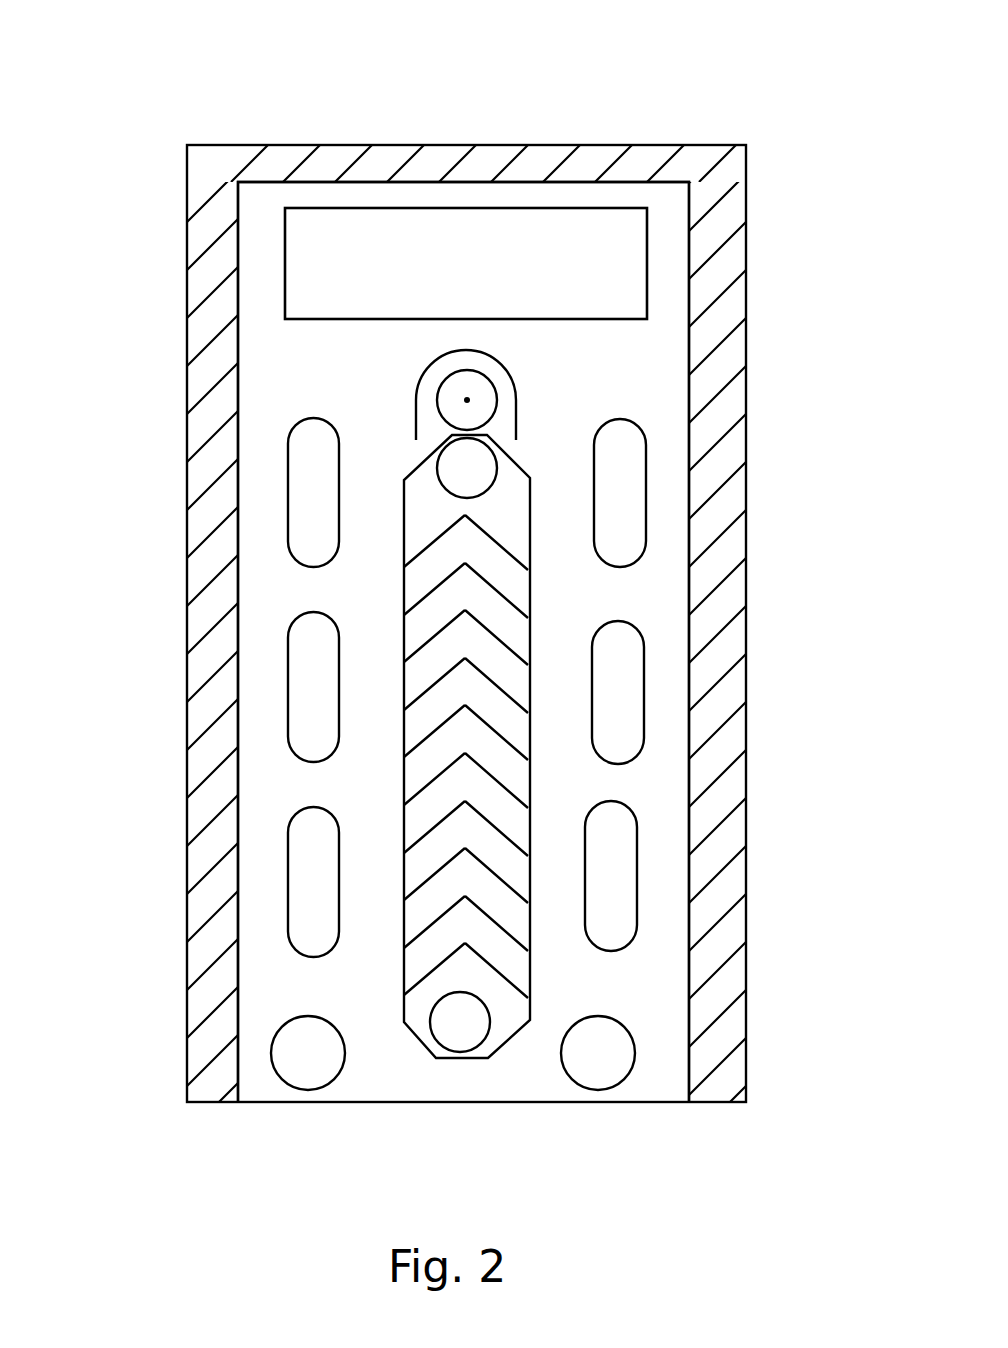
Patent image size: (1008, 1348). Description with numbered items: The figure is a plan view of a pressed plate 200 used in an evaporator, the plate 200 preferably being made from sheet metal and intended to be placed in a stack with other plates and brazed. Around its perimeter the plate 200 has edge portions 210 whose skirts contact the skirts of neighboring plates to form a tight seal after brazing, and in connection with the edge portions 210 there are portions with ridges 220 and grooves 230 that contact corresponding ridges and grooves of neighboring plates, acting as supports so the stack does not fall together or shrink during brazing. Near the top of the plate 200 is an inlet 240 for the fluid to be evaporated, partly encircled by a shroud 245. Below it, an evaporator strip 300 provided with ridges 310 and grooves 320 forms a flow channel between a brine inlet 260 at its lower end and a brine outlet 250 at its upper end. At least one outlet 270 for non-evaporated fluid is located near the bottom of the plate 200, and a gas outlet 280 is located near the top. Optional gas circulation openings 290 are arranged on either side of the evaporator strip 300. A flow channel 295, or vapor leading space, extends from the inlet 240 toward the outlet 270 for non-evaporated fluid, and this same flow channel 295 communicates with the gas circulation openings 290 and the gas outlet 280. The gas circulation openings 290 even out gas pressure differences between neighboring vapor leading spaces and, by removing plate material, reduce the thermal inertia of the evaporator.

The plate 200 is at (141, 68).
The edge portions 210 is at (468, 152).
The ridges 220 is at (608, 168).
The grooves 230 is at (648, 168).
The inlet 240 is at (437, 406).
The shroud 245 is at (415, 380).
The brine outlet 250 is at (443, 492).
The brine inlet 260 is at (432, 1018).
The outlet for non-evaporated fluid 270 is at (603, 1100).
The gas outlet 280 is at (362, 208).
The gas circulation openings 290 is at (284, 891).
The flow channel 295 is at (641, 373).
The evaporator strip 300 is at (540, 596).
The ridges 310 is at (507, 648).
The grooves 320 is at (517, 692).